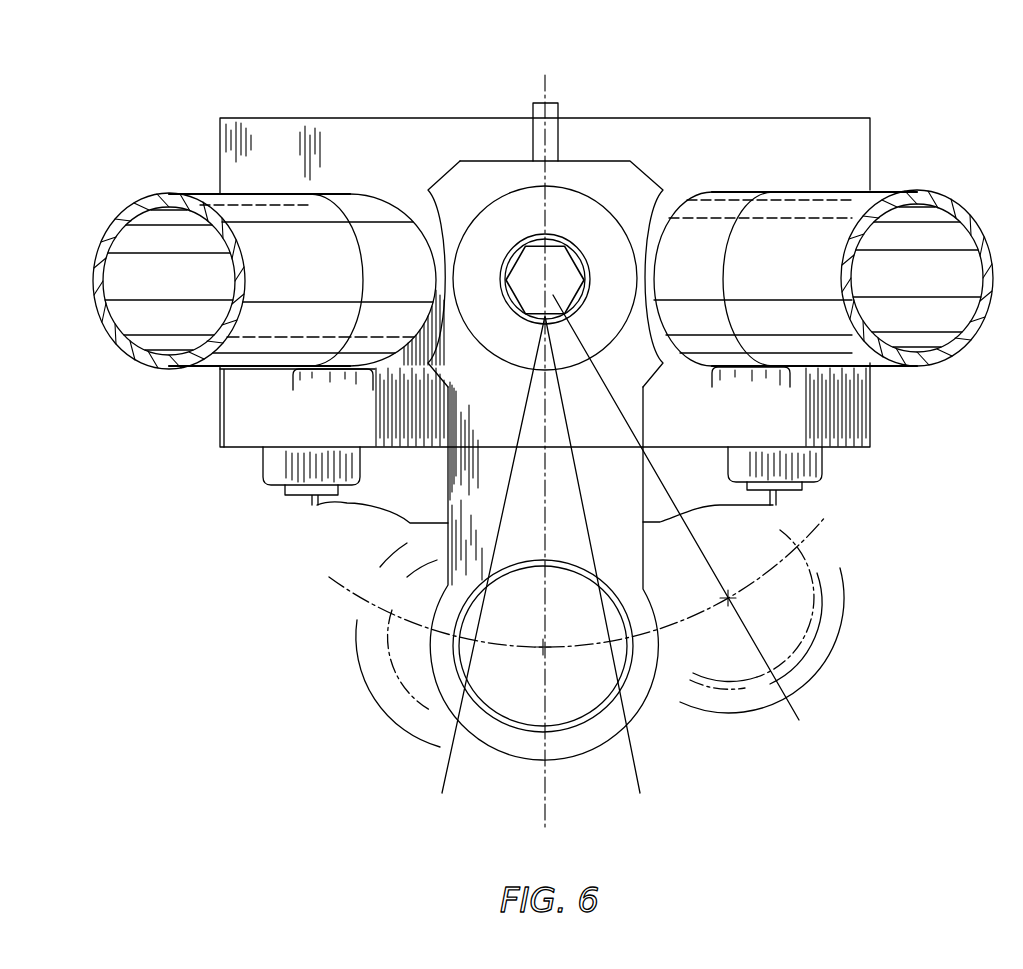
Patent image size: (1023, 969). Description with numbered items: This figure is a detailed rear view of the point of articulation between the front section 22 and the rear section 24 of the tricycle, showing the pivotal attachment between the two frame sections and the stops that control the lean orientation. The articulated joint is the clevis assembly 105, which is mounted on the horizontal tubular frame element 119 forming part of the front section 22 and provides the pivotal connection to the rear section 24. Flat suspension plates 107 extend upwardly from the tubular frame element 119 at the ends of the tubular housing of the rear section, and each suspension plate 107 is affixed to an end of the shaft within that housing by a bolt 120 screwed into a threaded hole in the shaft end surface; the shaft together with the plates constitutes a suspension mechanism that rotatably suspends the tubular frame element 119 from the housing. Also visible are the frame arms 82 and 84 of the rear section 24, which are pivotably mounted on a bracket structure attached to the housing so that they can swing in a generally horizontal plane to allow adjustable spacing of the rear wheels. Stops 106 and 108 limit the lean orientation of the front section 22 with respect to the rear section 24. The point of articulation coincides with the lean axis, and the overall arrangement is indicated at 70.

The clamp assembly 70 is at (873, 95).
The bolt 120 is at (558, 265).
The rear section 24 is at (240, 428).
The frame arm 84 is at (210, 375).
The frame arm 82 is at (893, 373).
The suspension plate 107 is at (647, 392).
The clevis assembly 105 is at (603, 478).
The stop 106 is at (718, 506).
The stop 108 is at (347, 504).
The front section 22 is at (631, 714).
The tubular frame element 119 is at (567, 728).